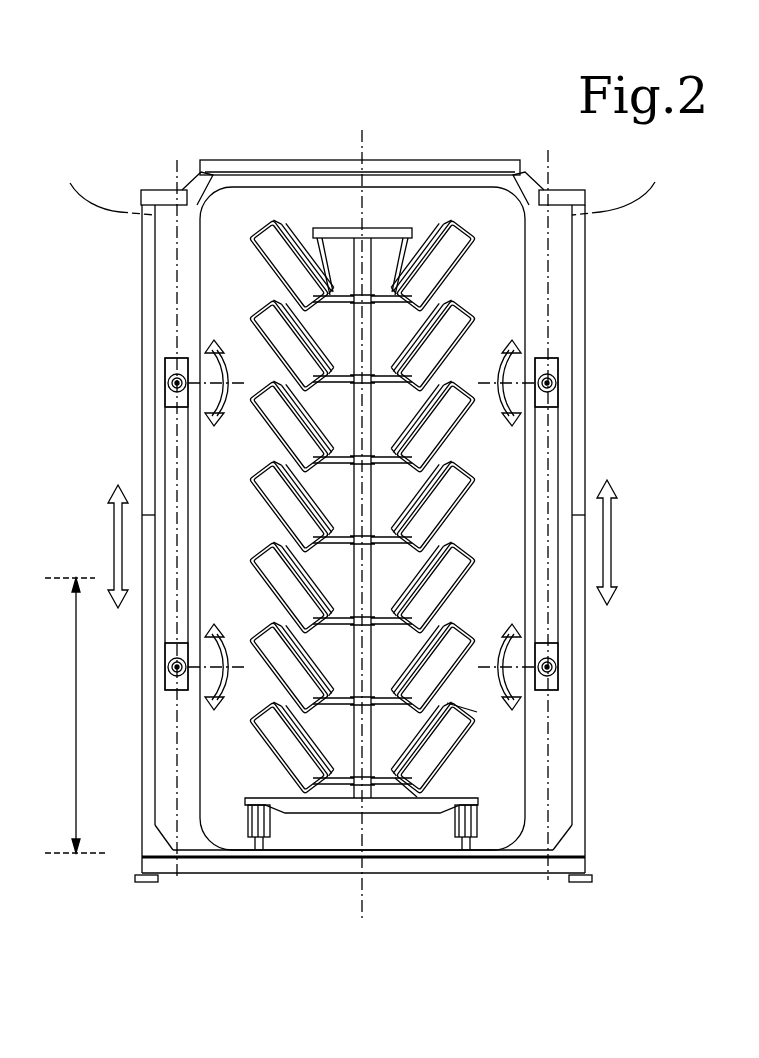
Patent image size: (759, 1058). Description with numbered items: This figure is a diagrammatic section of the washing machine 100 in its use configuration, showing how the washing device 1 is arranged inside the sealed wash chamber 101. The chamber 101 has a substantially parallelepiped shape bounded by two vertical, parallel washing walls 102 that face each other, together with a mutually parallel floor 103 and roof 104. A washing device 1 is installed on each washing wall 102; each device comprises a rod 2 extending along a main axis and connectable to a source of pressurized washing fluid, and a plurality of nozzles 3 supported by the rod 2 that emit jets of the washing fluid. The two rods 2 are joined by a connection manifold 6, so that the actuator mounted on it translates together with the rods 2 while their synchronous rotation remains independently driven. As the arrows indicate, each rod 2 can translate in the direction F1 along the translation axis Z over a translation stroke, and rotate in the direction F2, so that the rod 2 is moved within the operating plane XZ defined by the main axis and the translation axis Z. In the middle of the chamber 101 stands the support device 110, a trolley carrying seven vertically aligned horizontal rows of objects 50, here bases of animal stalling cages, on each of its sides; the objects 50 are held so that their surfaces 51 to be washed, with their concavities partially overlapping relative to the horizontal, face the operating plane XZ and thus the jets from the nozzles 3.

The washing machine 100 is at (157, 161).
The washing device 1 is at (142, 398).
The sealed wash chamber 101 is at (232, 160).
The washing wall 102 is at (141, 278).
The floor 103 is at (510, 874).
The roof 104 is at (470, 172).
The support device (trolley) 110 is at (337, 214).
The rod 2 is at (170, 372).
The nozzle 3 is at (168, 384).
The connection manifold 6 is at (178, 465).
The objects for stalling laboratory animals 50 is at (495, 729).
The surface to be washed 51 is at (440, 749).
The operating plane XZ is at (362, 187).
The translation axis Z is at (75, 715).
The translation direction arrow F1 is at (100, 531).
The rotation direction arrow F2 is at (254, 366).